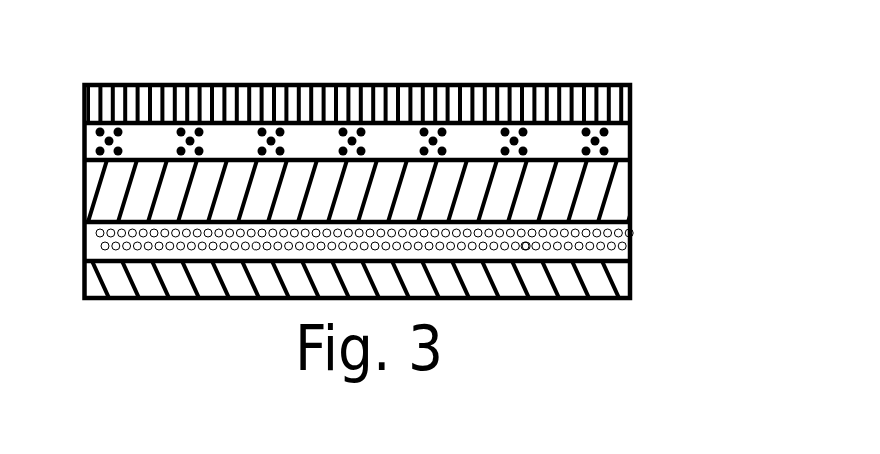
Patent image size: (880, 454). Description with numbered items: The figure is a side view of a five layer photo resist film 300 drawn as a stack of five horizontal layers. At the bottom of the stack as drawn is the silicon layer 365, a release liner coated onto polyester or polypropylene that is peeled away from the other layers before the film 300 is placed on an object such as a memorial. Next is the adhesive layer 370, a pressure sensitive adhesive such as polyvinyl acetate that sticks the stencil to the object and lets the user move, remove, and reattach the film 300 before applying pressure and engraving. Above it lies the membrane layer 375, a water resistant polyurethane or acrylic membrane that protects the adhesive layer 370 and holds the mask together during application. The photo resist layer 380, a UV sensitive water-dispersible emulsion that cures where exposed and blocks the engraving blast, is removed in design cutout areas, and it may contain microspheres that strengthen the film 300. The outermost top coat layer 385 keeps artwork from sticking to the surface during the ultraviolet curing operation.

The five layer photo resist film 300 is at (749, 82).
The silicon layer 365 is at (633, 115).
The adhesive layer 370 is at (83, 142).
The membrane layer 375 is at (633, 198).
The photo resist layer 380 is at (83, 245).
The top coat layer 385 is at (632, 288).